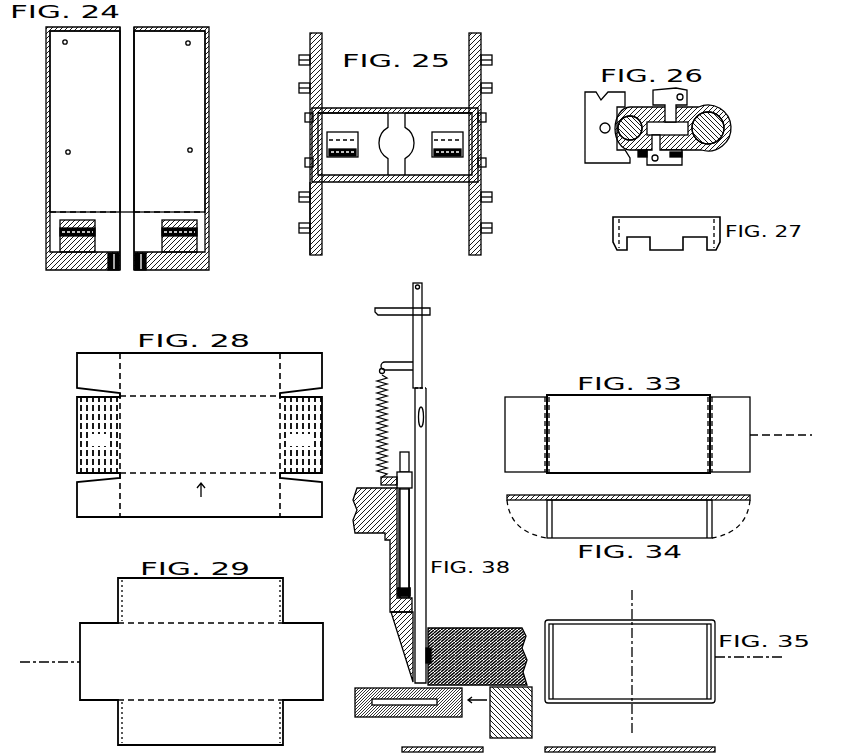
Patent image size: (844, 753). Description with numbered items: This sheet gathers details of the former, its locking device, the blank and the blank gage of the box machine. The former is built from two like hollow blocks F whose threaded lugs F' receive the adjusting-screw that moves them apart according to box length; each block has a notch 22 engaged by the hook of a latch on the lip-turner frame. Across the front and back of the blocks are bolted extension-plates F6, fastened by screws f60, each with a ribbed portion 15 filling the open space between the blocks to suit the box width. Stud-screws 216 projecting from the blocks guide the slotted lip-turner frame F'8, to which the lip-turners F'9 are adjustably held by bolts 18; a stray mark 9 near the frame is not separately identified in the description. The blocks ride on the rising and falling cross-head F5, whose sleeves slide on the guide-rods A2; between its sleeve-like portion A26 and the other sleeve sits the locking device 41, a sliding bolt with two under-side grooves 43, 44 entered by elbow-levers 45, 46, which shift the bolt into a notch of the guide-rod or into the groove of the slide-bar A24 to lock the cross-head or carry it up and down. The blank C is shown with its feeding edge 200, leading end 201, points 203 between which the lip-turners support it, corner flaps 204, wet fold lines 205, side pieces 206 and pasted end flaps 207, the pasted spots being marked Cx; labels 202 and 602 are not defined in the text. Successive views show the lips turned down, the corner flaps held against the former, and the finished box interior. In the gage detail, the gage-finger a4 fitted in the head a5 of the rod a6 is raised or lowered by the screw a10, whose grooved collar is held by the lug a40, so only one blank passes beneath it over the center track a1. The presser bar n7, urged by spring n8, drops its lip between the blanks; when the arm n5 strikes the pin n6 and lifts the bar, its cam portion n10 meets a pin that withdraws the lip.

In FIG. 24, the notch 22 is at (46, 131).
In FIG. 24, the ribbed portion 15 is at (129, 268).
In FIG. 25, the ribbed portion 15 is at (397, 165).
In FIG. 24, the hollow block F is at (127, 121).
In FIG. 25, the hollow block F is at (395, 122).
In FIG. 24, the threaded lug F' is at (128, 236).
In FIG. 25, the threaded lug F' is at (395, 151).
In FIG. 24, the extension-plate F6 is at (126, 36).
In FIG. 25, the extension-plate F6 is at (395, 108).
In FIG. 24, the screw f60 is at (74, 40).
In FIG. 25, the screw f60 is at (335, 108).
In FIG. 25, the bolt 18 is at (300, 88).
In FIG. 25, the stud-screw 216 is at (305, 118).
In FIG. 25, the lip-turner frame F'8 is at (390, 145).
In FIG. 25, the lip-turner F'9 is at (327, 218).
In FIG. 25, the frame bar 9 is at (469, 84).
In FIG. 26, the cross-head F5 is at (593, 140).
In FIG. 26, the guide-rod A2 is at (664, 125).
In FIG. 26, the slide-bar A24 is at (730, 121).
In FIG. 26, the sleeve-like portion A26 is at (724, 146).
In FIG. 26, the locking device 41 is at (667, 129).
In FIG. 27, the locking device 41 is at (663, 228).
In FIG. 27, the groove 43 is at (637, 246).
In FIG. 27, the groove 44 is at (695, 246).
In FIG. 26, the elbow-lever 45 is at (668, 165).
In FIG. 26, the elbow-lever 46 is at (660, 91).
In FIG. 28, the edge of blank 200 is at (199, 442).
In FIG. 28, the leading end 201 is at (200, 361).
In FIG. 28, the fold lines 202 is at (200, 436).
In FIG. 28, the point 203 is at (198, 437).
In FIG. 28, the corner flap 204 is at (92, 371).
In FIG. 33, the corner flap 204 is at (548, 428).
In FIG. 34, the corner flap 204 is at (553, 522).
In FIG. 35, the corner flap 204 is at (552, 650).
In FIG. 28, the dotted line 205 is at (213, 400).
In FIG. 29, the dotted line 205 is at (210, 625).
In FIG. 28, the side piece 206 is at (200, 435).
In FIG. 34, the side piece 206 is at (629, 519).
In FIG. 29, the side piece 206 is at (201, 661).
In FIG. 35, the side piece 206 is at (604, 621).
In FIG. 28, the end flap 207 is at (199, 435).
In FIG. 38, the end flap 207 is at (442, 743).
In FIG. 33, the end flap 207 is at (658, 434).
In FIG. 34, the end flap 207 is at (628, 516).
In FIG. 29, the end flap 207 is at (198, 688).
In FIG. 35, the end flap 207 is at (549, 661).
In FIG. 28, the blank C is at (204, 458).
In FIG. 38, the blank C is at (487, 640).
In FIG. 29, the blank C is at (171, 661).
In FIG. 28, the pasted portion Cx is at (77, 426).
In FIG. 38, the arm n5 is at (410, 305).
In FIG. 38, the pin n6 is at (420, 288).
In FIG. 38, the presser bar n7 is at (422, 344).
In FIG. 38, the spring n8 is at (378, 392).
In FIG. 38, the cam portion n10 is at (422, 655).
In FIG. 38, the center track a1 is at (368, 686).
In FIG. 38, the gage-finger a4 is at (426, 395).
In FIG. 38, the head a5 is at (390, 553).
In FIG. 38, the rod a6 is at (368, 492).
In FIG. 38, the screw a10 is at (405, 452).
In FIG. 38, the lug a40 is at (388, 476).
In FIG. 38, the slot 602 is at (395, 708).